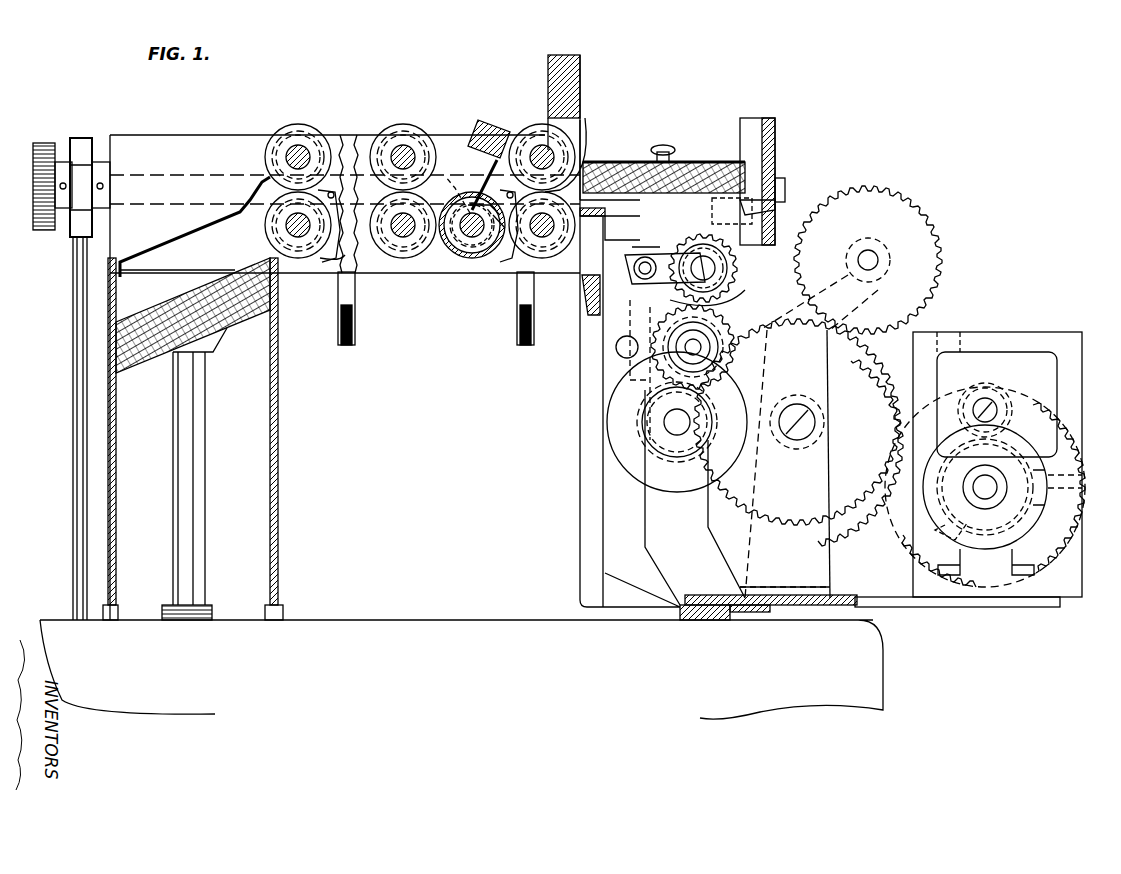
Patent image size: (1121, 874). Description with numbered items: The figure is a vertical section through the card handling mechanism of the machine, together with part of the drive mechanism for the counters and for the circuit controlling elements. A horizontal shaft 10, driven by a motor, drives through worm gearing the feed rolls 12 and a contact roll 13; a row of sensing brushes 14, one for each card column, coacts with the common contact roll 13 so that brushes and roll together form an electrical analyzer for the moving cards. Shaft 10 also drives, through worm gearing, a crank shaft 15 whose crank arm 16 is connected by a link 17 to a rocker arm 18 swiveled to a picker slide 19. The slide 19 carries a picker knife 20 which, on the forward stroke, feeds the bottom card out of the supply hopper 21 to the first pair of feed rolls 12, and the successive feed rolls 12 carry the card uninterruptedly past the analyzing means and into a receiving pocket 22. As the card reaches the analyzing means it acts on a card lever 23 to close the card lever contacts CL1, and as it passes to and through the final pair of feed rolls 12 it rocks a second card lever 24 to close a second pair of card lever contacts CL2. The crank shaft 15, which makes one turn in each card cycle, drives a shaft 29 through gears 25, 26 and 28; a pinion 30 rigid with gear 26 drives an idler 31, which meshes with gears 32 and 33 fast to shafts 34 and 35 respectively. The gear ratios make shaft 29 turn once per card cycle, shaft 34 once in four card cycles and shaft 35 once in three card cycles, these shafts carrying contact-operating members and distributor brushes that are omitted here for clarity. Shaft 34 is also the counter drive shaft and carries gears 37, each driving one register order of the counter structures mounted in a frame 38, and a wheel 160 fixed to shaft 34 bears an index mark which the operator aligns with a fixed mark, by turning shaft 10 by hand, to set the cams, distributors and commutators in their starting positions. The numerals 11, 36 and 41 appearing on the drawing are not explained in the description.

The horizontal shaft 10 is at (210, 165).
The roller surface 11 is at (458, 250).
The feed rolls 12 is at (312, 133).
The contact roll 13 is at (470, 262).
The sensing brushes 14 is at (470, 180).
The crank shaft 15 is at (731, 211).
The crank arm 16 is at (755, 318).
The link 17 is at (690, 268).
The rocker arm 18 is at (642, 232).
The picker slide 19 is at (627, 175).
The picker knife 20 is at (772, 195).
The supply hopper 21 is at (745, 137).
The receiving pocket 22 is at (193, 439).
The card lever 23 is at (503, 265).
The second card lever 24 is at (342, 258).
The gear 25 is at (600, 310).
The gear 26 is at (616, 349).
The gear 28 is at (640, 407).
The shaft 29 is at (672, 430).
The pinion 30 is at (730, 355).
The idler 31 is at (872, 382).
The gear 32 is at (897, 508).
The gear 33 is at (925, 232).
The shaft 34 is at (987, 486).
The shaft 35 is at (866, 260).
The motor gear 36 is at (1058, 532).
The gears 37 is at (942, 522).
The frame 38 is at (1058, 336).
The pulley 41 is at (1000, 385).
The wheel 160 is at (1042, 490).
The card lever contacts CL1 is at (525, 290).
The second card lever contacts CL2 is at (345, 290).